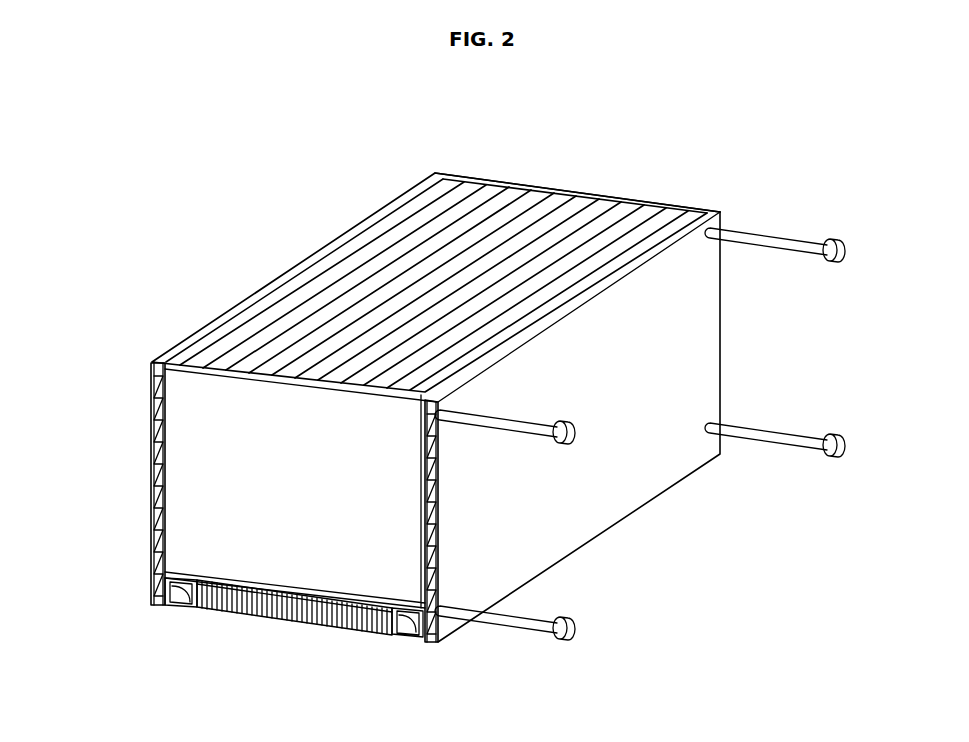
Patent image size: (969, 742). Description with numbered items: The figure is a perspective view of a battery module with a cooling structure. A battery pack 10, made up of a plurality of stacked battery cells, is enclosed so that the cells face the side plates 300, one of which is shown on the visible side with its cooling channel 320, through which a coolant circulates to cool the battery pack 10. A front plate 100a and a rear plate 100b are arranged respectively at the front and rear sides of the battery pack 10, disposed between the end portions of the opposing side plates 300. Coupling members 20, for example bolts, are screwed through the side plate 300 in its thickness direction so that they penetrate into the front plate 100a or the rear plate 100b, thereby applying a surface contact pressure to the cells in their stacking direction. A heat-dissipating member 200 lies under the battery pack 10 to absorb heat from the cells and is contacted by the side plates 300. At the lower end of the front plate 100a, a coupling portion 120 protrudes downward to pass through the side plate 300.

The battery pack 10 is at (318, 285).
The coupling member 20 is at (790, 432).
The front plate 100a is at (182, 488).
The rear plate 100b is at (572, 196).
The coupling portion 120 is at (178, 590).
The heat-dissipating member 200 is at (272, 612).
The side plate 300 is at (665, 469).
The cooling channel 320 is at (437, 500).